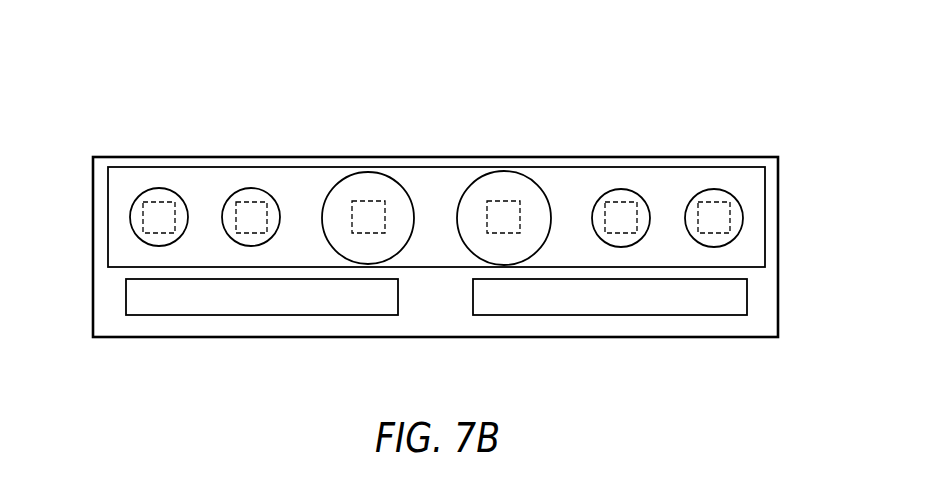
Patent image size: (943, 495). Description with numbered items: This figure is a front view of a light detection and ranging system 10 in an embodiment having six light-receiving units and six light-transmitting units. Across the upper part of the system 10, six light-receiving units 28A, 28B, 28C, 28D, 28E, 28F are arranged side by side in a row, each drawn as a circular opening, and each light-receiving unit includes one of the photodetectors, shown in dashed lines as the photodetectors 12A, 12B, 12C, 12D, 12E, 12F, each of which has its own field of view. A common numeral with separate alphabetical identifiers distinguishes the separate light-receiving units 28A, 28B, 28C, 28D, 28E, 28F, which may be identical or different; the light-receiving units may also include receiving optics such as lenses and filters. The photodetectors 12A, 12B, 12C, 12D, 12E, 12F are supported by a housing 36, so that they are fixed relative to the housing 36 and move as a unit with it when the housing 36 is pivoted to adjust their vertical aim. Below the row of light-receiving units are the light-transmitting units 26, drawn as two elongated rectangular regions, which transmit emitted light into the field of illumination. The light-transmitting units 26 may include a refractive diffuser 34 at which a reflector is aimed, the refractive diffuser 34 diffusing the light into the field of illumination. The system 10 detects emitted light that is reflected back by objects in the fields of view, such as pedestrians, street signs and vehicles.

The system 10 is at (809, 72).
The first photodetector 12A is at (160, 202).
The second photodetector 12B is at (253, 202).
The photodetector 12C is at (371, 201).
The photodetector 12D is at (501, 201).
The photodetector 12E is at (618, 202).
The photodetector 12F is at (712, 202).
The light-transmitting unit 26 is at (242, 318).
The light-receiving unit 28A is at (139, 189).
The light-receiving unit 28B is at (231, 189).
The light-receiving unit 28C is at (326, 188).
The light-receiving unit 28D is at (547, 188).
The light-receiving unit 28E is at (643, 189).
The light-receiving unit 28F is at (736, 189).
The refractive diffuser 34 is at (168, 317).
The housing 36 is at (765, 202).